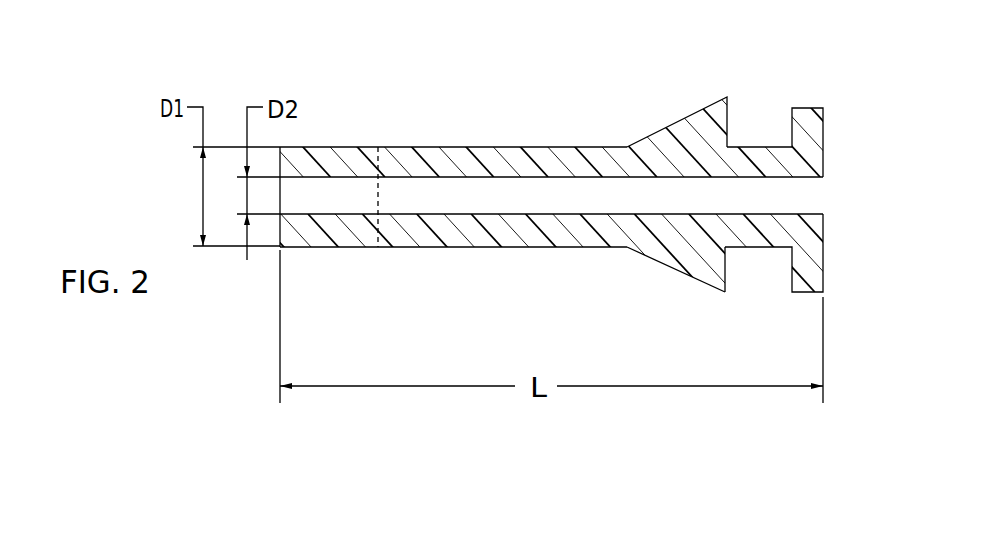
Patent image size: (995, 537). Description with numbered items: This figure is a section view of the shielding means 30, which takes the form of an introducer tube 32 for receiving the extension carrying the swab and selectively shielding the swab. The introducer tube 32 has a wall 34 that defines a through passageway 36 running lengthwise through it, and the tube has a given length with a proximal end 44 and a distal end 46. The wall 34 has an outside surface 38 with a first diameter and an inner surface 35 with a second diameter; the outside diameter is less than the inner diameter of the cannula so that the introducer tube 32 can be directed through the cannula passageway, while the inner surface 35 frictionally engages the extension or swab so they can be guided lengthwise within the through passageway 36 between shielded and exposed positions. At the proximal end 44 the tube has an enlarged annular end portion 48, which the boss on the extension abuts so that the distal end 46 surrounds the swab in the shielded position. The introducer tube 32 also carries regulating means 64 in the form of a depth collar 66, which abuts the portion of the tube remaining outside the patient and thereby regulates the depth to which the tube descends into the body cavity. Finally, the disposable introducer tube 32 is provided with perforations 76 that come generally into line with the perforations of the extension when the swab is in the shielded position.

The shielding means 30 is at (330, 52).
The introducer tube 32 is at (452, 147).
The wall 34 is at (467, 242).
The inner surface 35 is at (480, 178).
The through passageway 36 is at (556, 176).
The outside surface 38 is at (420, 147).
The proximal end 44 is at (760, 88).
The distal end 46 is at (270, 273).
The enlarged annular end portion 48 is at (820, 128).
The regulating means 64 is at (638, 283).
The depth collar 66 is at (680, 277).
The perforations 76 is at (362, 147).